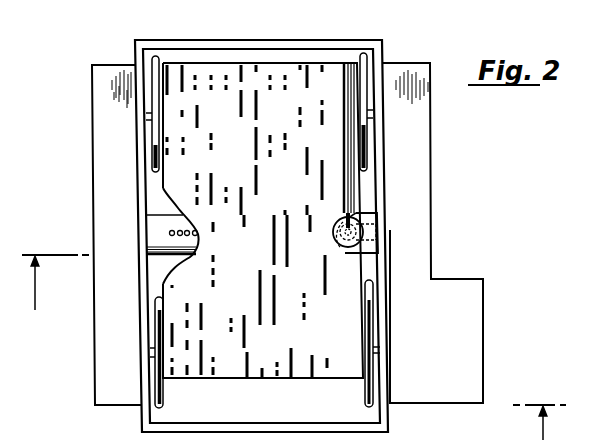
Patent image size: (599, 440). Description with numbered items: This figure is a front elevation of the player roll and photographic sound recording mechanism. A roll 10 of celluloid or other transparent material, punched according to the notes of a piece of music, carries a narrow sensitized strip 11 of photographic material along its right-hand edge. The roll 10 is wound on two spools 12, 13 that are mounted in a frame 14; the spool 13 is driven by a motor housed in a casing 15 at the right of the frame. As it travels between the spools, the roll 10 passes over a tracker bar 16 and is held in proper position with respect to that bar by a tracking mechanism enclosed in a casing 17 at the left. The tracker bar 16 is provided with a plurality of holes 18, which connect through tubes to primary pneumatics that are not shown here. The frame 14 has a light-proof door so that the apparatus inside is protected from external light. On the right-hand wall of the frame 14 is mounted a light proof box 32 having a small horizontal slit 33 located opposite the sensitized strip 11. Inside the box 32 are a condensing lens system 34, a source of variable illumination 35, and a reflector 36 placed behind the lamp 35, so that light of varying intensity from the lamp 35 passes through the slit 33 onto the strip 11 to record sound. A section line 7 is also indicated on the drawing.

The section line 7- 7 is at (290, 347).
The roll 10 is at (272, 62).
The sensitized strip 11 is at (350, 188).
The spool 12 is at (152, 150).
The spool 13 is at (160, 373).
The frame 14 is at (176, 46).
The casing 15 is at (483, 311).
The tracker bar 16 is at (162, 256).
The casing 17 is at (96, 213).
The holes 18 is at (190, 230).
The light proof box 32 is at (364, 213).
The horizontal slit 33 is at (346, 254).
The condensing lens system 34 is at (345, 224).
The source of variable illumination 35 is at (376, 224).
The reflector 36 is at (344, 241).